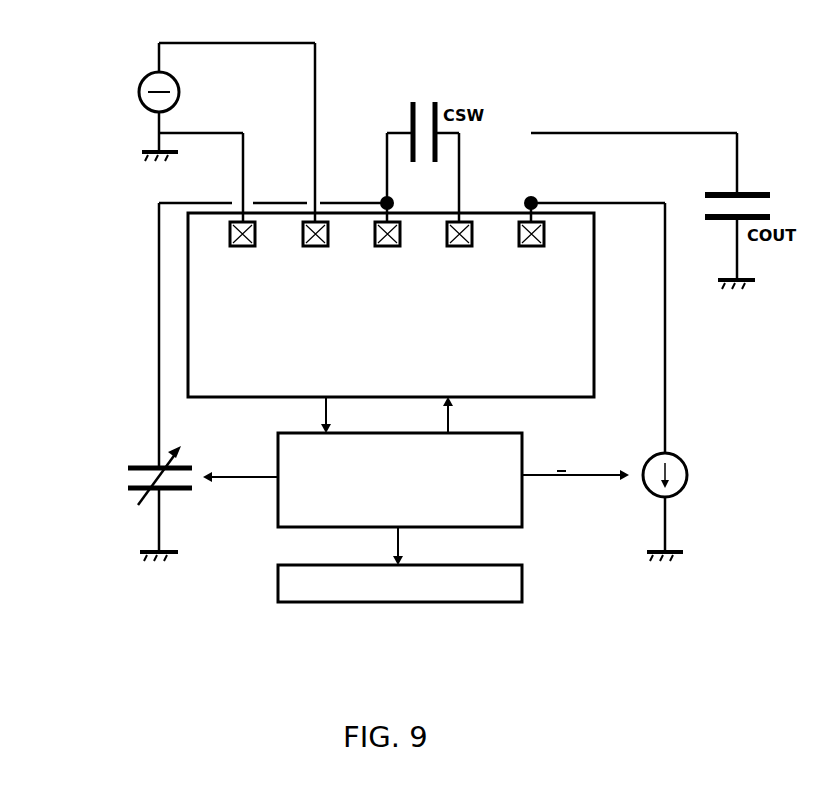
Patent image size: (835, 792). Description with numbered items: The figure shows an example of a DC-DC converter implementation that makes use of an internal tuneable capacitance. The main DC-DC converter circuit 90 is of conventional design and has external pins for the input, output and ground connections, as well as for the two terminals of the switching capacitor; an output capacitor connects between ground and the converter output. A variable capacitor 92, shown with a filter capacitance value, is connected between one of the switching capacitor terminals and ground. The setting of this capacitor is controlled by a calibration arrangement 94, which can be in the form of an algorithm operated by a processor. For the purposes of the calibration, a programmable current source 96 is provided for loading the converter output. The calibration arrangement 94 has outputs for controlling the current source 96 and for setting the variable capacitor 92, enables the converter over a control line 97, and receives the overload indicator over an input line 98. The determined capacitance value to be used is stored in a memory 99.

The DC-DC converter circuit 90 is at (497, 212).
The variable capacitor 92 is at (135, 490).
The calibration arrangement 94 is at (278, 510).
The programmable current source 96 is at (689, 470).
The control line 97 is at (452, 417).
The input line 98 is at (320, 413).
The memory 99 is at (425, 603).